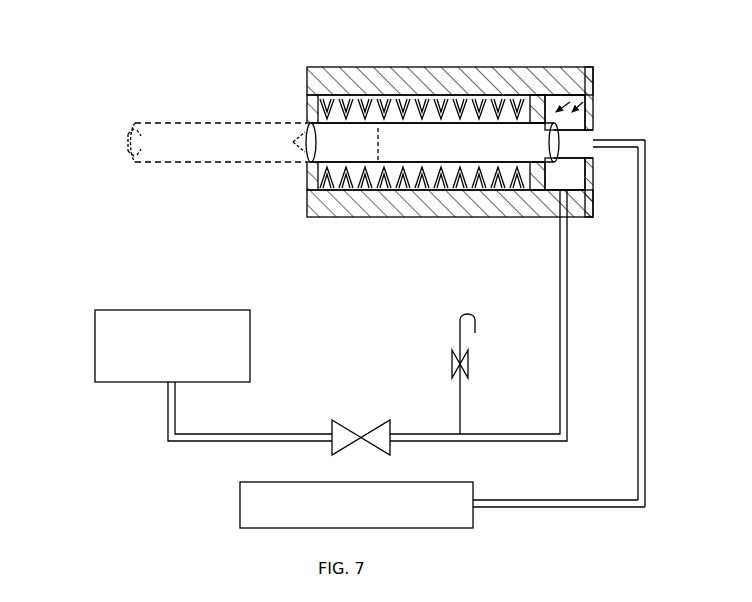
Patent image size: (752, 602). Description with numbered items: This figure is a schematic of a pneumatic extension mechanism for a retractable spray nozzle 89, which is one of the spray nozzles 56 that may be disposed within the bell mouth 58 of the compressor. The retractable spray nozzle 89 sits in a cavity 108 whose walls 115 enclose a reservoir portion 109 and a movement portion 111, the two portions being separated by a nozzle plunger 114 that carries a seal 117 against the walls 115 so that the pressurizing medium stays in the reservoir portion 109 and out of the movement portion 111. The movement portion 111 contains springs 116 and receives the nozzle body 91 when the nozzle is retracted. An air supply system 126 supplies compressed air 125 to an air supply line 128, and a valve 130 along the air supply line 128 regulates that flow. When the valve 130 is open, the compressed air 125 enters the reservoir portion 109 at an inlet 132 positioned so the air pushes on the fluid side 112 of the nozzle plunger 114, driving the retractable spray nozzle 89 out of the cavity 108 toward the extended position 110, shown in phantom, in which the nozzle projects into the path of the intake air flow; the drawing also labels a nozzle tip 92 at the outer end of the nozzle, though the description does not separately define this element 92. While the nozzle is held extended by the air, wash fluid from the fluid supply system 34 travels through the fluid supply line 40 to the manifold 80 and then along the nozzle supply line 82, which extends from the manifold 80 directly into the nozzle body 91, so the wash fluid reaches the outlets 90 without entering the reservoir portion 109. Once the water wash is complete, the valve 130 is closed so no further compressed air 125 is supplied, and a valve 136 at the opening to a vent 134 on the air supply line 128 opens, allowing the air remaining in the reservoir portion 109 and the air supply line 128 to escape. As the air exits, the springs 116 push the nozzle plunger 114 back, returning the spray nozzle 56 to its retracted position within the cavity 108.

The fluid supply system 34 is at (306, 481).
The fluid supply line 40 is at (560, 508).
The spray nozzle 56 is at (226, 173).
The bell mouth 58 is at (396, 128).
The manifold 80 is at (646, 322).
The nozzle supply line 82 is at (590, 138).
The retractable spray nozzle 89 is at (182, 122).
The outlets 90 is at (307, 160).
The nozzle body 91 is at (412, 124).
The tip 92 is at (302, 136).
The cavity 108 is at (468, 186).
The reservoir portion 109 is at (595, 104).
The extended position 110 is at (226, 157).
The movement portion 111 is at (437, 122).
The fluid side 112 is at (582, 93).
The nozzle plunger 114 is at (536, 188).
The walls 115 is at (520, 106).
The springs 116 is at (364, 178).
The seal 117 is at (537, 97).
The compressed air 125 is at (253, 433).
The air supply system 126 is at (172, 309).
The air supply line 128 is at (478, 442).
The valve 130 is at (352, 420).
The inlet 132 is at (566, 182).
The vent 134 is at (458, 315).
The valve 136 is at (452, 362).